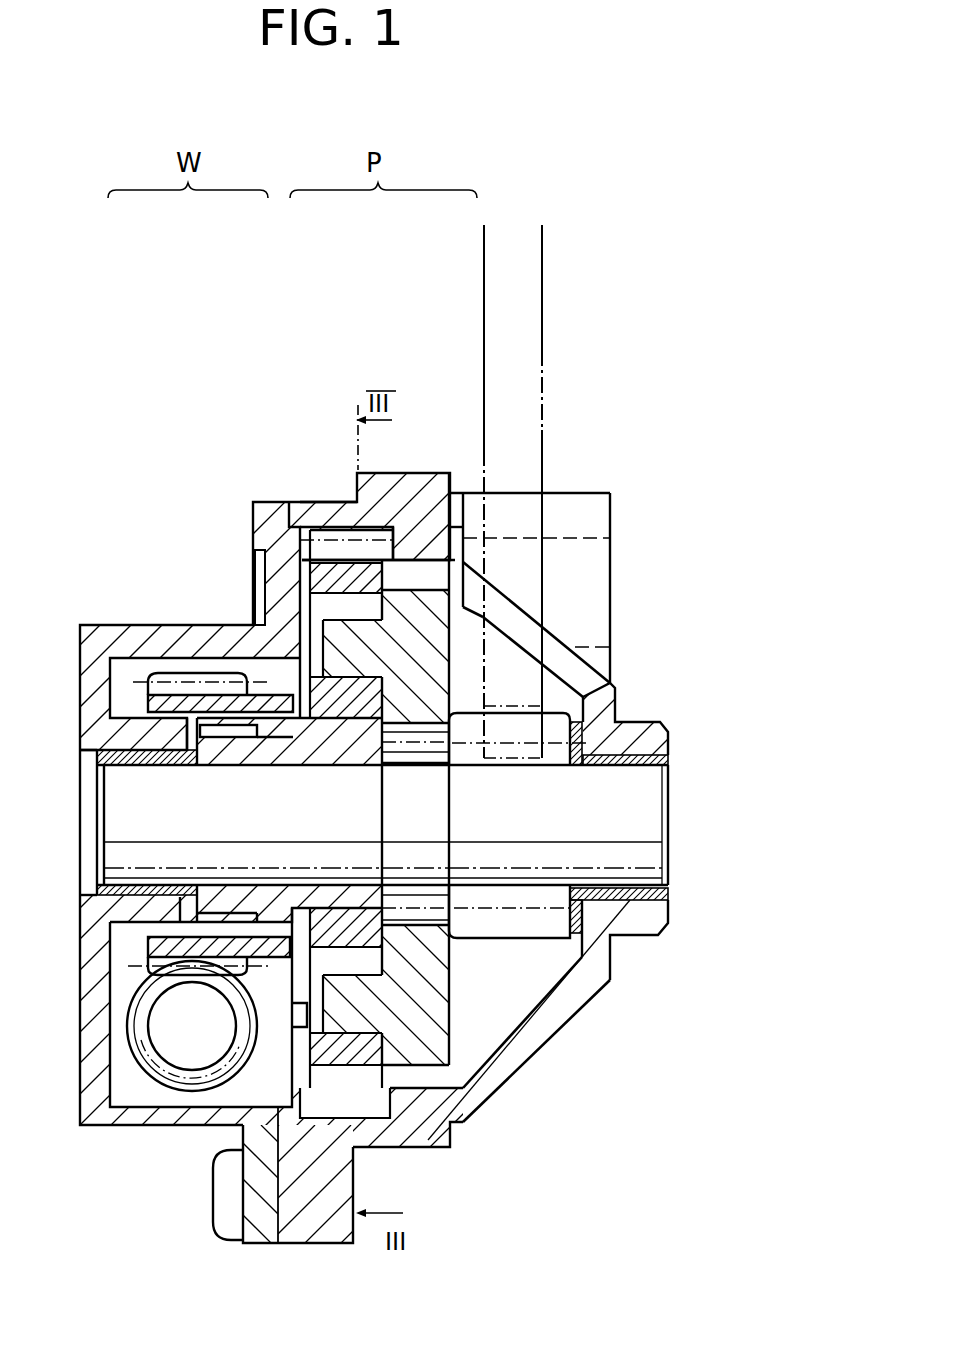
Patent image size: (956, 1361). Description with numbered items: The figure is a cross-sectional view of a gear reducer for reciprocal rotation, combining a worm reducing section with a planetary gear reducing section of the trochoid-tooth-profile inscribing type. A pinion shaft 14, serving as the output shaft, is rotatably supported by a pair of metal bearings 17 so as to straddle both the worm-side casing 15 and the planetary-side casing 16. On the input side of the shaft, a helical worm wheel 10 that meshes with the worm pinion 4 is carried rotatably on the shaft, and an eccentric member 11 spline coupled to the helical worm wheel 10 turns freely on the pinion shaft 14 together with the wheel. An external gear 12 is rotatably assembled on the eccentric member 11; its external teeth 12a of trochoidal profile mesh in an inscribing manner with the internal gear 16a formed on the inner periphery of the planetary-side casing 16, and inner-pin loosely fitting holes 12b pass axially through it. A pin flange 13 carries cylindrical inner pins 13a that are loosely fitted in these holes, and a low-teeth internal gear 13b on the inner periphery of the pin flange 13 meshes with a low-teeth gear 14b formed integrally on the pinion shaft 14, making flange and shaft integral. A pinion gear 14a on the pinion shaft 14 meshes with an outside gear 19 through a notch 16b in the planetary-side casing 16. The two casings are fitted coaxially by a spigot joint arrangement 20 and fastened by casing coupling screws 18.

The worm pinion 4 is at (167, 1013).
The helical worm wheel 10 is at (110, 940).
The eccentric member 11 is at (217, 897).
The external gear 12 is at (425, 609).
The external teeth 12a is at (369, 523).
The inner-pin loosely fitting holes 12b is at (336, 582).
The pin flange 13 is at (424, 716).
The inner pins 13a is at (315, 610).
The low-teeth internal gear 13b is at (521, 700).
The pinion shaft 14 is at (628, 795).
The pinion gear 14a is at (570, 647).
The low-teeth gear 14b is at (586, 755).
The worm-side casing 15 is at (85, 1097).
The planetary-side casing 16 is at (563, 997).
The internal gear 16a is at (342, 513).
The notch 16b is at (568, 615).
The metal bearings 17 is at (130, 882).
The casing coupling screws 18 is at (230, 1217).
The outside gear 19 is at (484, 292).
The spigot joint arrangement 20 is at (290, 1130).